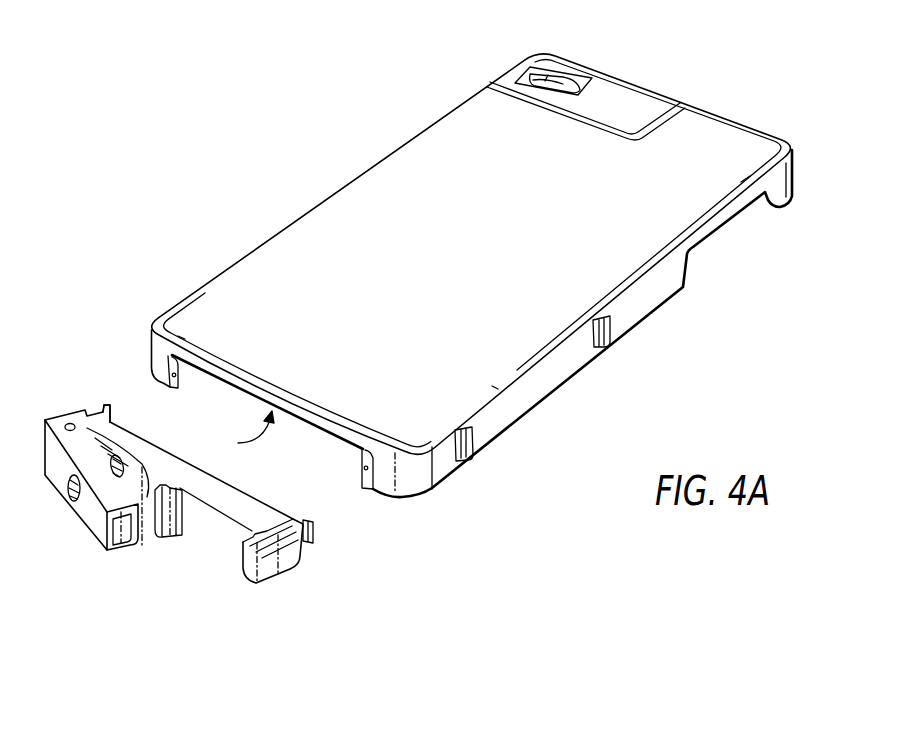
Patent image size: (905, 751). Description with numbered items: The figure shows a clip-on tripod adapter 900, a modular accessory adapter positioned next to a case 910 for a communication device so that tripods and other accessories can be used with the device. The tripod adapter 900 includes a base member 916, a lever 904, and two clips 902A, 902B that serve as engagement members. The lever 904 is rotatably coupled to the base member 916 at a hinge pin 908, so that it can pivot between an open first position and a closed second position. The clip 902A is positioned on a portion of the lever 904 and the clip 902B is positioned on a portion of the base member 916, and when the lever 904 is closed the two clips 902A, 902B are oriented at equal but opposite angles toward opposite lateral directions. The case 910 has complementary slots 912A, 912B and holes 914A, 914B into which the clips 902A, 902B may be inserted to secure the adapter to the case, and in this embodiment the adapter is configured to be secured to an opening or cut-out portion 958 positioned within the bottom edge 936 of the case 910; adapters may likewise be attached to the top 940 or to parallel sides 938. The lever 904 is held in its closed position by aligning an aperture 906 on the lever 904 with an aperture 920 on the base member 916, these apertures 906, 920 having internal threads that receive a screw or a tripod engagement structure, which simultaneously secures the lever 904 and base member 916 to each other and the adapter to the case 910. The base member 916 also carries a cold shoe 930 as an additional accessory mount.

The clip-on tripod adapter 900 is at (196, 505).
The clip 902A is at (118, 405).
The clip 902B is at (302, 520).
The lever 904 is at (97, 543).
The aperture 906 is at (66, 492).
The hinge pin 908 is at (70, 422).
The case 910 is at (252, 252).
The slot 912A is at (172, 382).
The slot 912B is at (360, 464).
The hole 914A is at (473, 442).
The hole 914B is at (610, 335).
The base member 916 is at (165, 538).
The aperture 920 is at (150, 448).
The cold shoe 930 is at (228, 523).
The bottom edge 936 is at (312, 403).
The side 938 is at (413, 139).
The top 940 is at (653, 89).
The opening or cut-out portion 958 is at (237, 432).